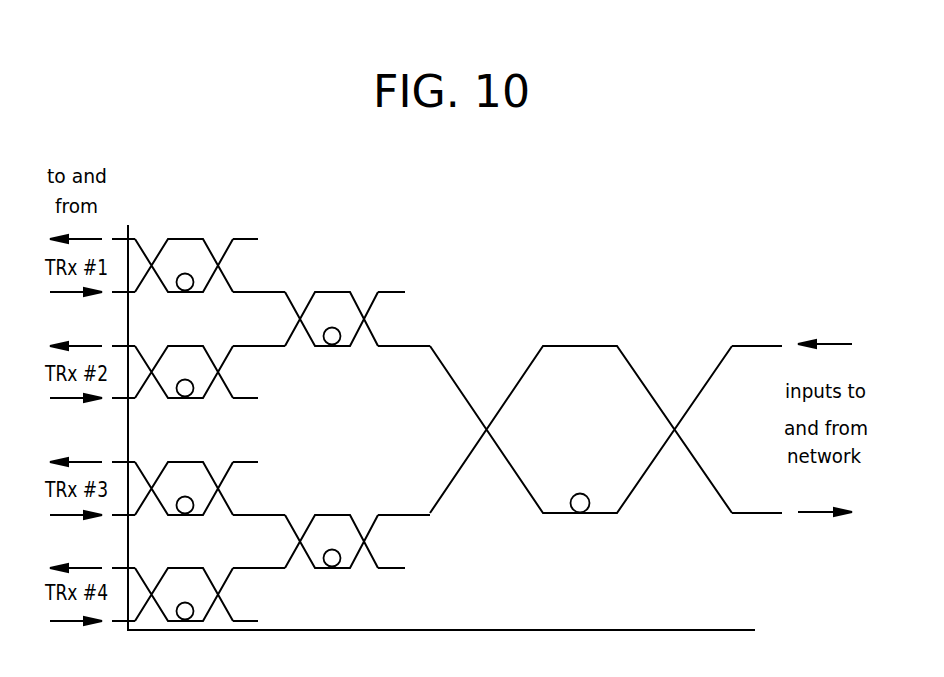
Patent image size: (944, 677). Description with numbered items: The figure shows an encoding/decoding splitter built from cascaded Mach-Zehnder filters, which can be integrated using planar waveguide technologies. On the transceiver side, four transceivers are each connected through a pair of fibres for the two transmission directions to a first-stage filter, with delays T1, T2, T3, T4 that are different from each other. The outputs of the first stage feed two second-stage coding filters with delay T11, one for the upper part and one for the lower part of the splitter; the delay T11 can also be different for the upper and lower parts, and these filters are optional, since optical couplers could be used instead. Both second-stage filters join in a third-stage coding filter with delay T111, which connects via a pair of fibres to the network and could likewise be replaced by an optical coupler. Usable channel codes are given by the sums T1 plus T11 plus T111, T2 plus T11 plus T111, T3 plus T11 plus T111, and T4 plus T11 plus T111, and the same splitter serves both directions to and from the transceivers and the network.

The delay T1 is at (184, 265).
The delay T2 is at (184, 371).
The delay T3 is at (184, 488).
The delay T4 is at (184, 594).
The coding filter T11 is at (331, 429).
The coding filter T111 is at (581, 429).